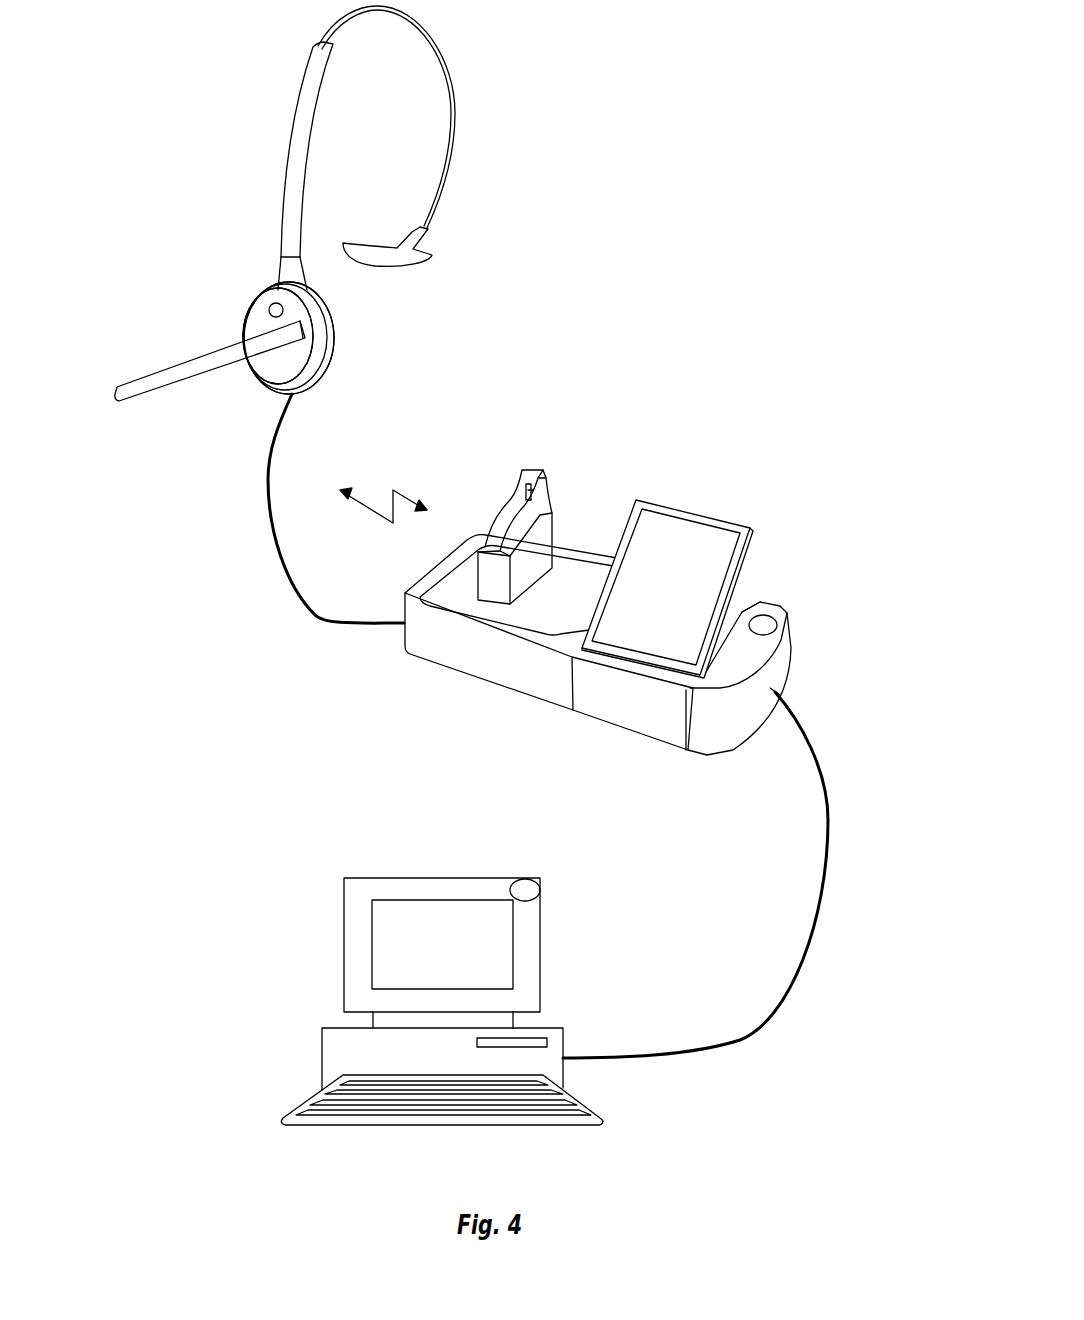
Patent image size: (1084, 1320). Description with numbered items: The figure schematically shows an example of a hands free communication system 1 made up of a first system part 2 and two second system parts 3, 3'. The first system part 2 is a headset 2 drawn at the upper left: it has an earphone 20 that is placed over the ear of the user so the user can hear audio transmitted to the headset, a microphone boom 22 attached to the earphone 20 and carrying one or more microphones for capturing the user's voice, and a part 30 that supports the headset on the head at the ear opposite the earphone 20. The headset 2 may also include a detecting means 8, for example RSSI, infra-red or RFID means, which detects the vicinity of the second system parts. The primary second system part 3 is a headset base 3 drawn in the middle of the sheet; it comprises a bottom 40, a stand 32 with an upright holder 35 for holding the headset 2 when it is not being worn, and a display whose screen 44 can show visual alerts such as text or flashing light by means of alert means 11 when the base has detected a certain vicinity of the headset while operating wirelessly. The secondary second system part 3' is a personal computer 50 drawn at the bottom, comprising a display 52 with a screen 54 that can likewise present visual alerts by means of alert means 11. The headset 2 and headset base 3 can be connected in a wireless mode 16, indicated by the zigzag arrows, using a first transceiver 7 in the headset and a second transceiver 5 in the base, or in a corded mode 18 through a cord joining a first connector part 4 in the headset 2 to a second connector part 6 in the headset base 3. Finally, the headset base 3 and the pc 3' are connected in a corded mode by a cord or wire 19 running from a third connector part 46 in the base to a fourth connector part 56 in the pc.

The hands free communication system 1 is at (786, 156).
The headset 2 is at (327, 242).
The headset base 3 is at (573, 595).
The personal computer 3' is at (429, 981).
The first connector part 4 is at (297, 397).
The second transceiver 5 is at (565, 675).
The second connector part 6 is at (397, 620).
The first transceiver 7 is at (257, 325).
The detecting means 8 is at (283, 309).
The alert means 11 is at (667, 589).
The wireless mode 16 is at (385, 490).
The corded mode 18 is at (318, 508).
The cord or wire 19 is at (780, 1002).
The earphone 20 is at (278, 336).
The microphone boom 22 is at (208, 366).
The part supporting the headset 30 is at (300, 125).
The stand 32 is at (498, 580).
The holder 35 is at (515, 492).
The bottom 40 is at (565, 675).
The screen 44 is at (707, 601).
The third connector part 46 is at (784, 693).
The personal computer 50 is at (429, 981).
The display 52 is at (540, 938).
The screen 54 is at (487, 950).
The fourth connector part 56 is at (573, 1070).